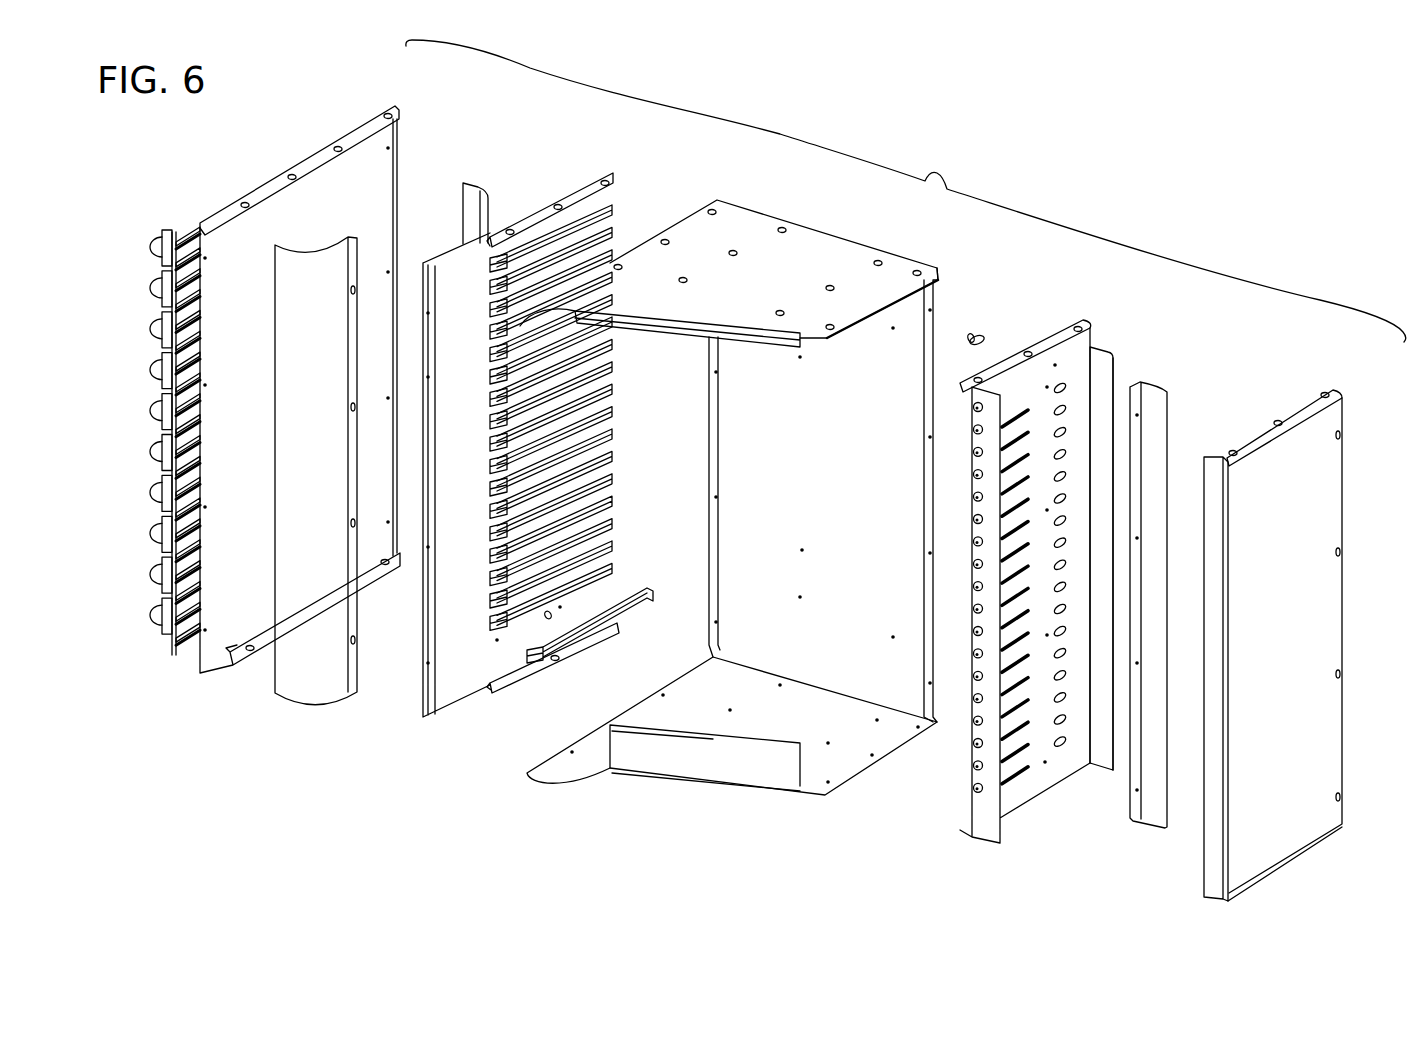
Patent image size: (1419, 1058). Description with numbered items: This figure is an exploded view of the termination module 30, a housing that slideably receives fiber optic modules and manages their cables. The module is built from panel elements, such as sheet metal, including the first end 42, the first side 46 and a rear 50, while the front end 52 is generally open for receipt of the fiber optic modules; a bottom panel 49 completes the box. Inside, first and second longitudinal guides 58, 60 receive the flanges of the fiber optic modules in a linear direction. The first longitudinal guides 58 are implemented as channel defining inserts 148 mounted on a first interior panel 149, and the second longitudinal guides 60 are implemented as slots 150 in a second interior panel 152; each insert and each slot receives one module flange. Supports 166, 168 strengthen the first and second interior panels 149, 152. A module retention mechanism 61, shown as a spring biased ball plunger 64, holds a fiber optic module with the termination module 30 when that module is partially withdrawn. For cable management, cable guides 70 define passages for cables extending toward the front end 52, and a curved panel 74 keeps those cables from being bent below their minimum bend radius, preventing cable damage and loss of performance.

The termination module 30 is at (906, 191).
The first end 42 is at (800, 257).
The first side 46 is at (1306, 622).
The bottom panel 49 is at (838, 763).
The rear 50 is at (834, 464).
The front end 52 is at (713, 737).
The first longitudinal guides 58 is at (971, 790).
The second longitudinal guides 60 is at (607, 563).
The module retention mechanism 61 is at (987, 334).
The spring biased ball plunger 64 is at (970, 332).
The cable guides 70 is at (150, 285).
The curved panel 74 is at (313, 706).
The channel defining inserts 148 is at (612, 214).
The first interior panel 149 is at (447, 693).
The slots 150 is at (1013, 773).
The second interior panel 152 is at (1067, 780).
The support 166 is at (479, 180).
The support 168 is at (1167, 392).